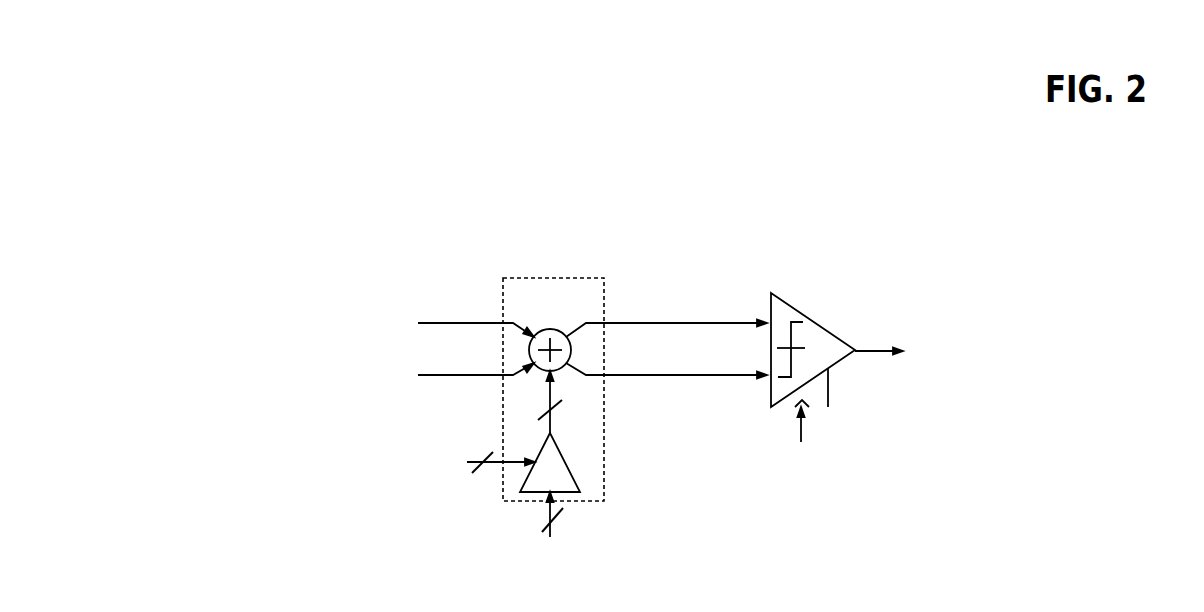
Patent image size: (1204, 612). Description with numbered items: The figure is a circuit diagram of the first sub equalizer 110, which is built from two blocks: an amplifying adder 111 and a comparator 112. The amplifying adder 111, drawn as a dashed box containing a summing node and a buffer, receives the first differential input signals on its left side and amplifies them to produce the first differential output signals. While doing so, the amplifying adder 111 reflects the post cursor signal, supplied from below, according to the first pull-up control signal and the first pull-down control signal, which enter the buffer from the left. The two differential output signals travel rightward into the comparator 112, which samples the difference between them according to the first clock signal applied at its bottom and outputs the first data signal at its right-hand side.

The first sub equalizer 110 is at (234, 178).
The amplifying adder 111 is at (554, 278).
The comparator 112 is at (792, 303).